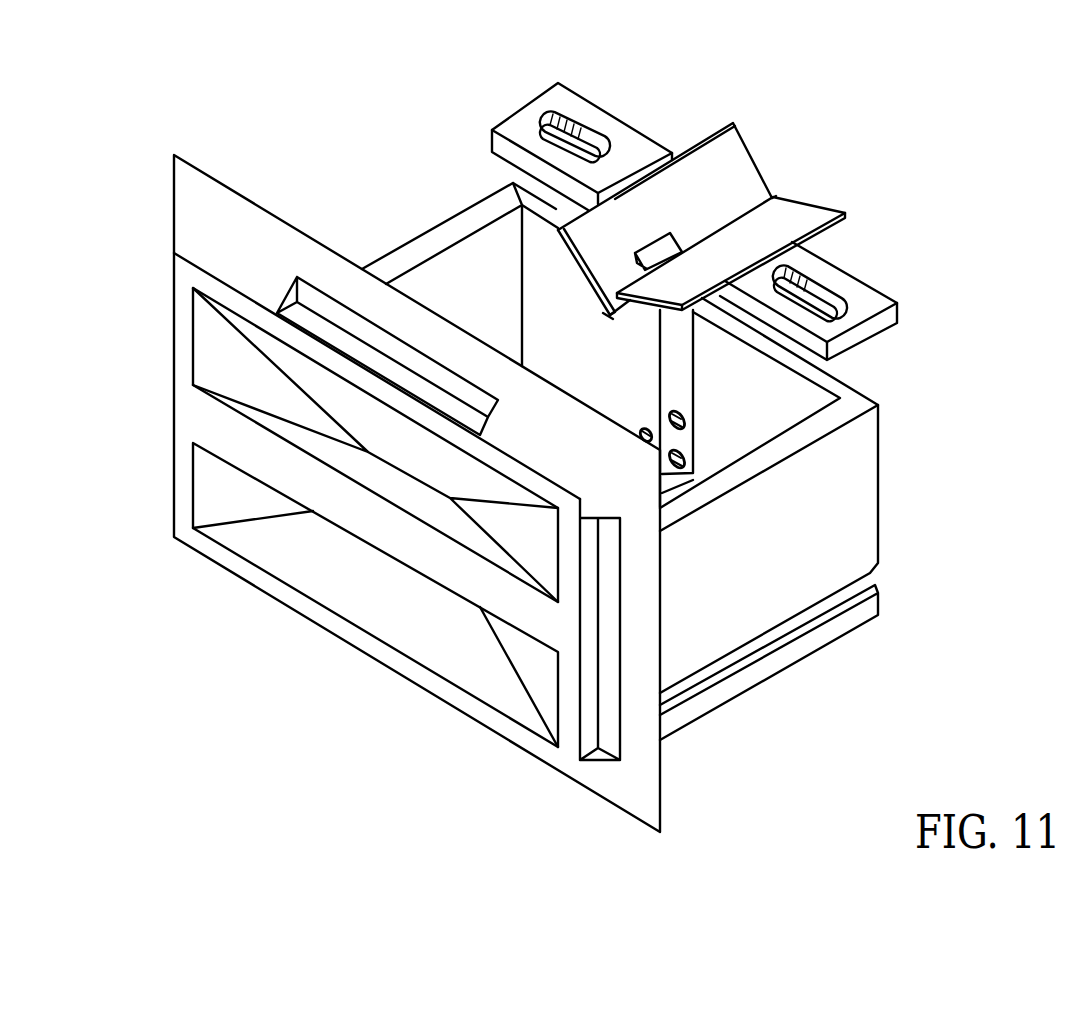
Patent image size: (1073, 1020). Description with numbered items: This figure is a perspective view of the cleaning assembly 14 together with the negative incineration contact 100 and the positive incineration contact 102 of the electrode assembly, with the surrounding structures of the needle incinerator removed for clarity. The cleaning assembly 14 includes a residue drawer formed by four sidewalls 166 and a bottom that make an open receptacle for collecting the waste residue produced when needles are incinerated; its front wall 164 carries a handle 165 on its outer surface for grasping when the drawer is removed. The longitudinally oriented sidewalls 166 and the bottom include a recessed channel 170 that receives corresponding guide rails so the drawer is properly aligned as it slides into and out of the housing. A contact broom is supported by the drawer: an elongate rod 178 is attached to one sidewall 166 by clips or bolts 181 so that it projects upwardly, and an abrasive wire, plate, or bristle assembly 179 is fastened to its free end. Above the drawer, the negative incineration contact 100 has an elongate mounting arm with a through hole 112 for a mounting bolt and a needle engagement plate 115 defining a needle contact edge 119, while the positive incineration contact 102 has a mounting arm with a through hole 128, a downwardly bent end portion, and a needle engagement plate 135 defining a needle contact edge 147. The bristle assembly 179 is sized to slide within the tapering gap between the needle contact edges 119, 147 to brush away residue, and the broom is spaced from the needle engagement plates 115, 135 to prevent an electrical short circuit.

The cleaning assembly 14 is at (198, 432).
The negative incineration contact 100 is at (867, 268).
The positive incineration contact 102 is at (630, 93).
The through hole 112 is at (832, 298).
The needle engagement plate 115 is at (820, 212).
The needle contact edge 119 is at (776, 192).
The through hole 128 is at (578, 130).
The needle engagement plate 135 is at (727, 147).
The needle contact edge 147 is at (622, 313).
The front wall 164 is at (187, 197).
The handle 165 is at (388, 483).
The sidewall 166 is at (440, 268).
The recessed channel 170 is at (878, 592).
The elongate rod 178 is at (684, 357).
The bristle assembly 179 is at (672, 240).
The clips or bolts 181 is at (684, 431).